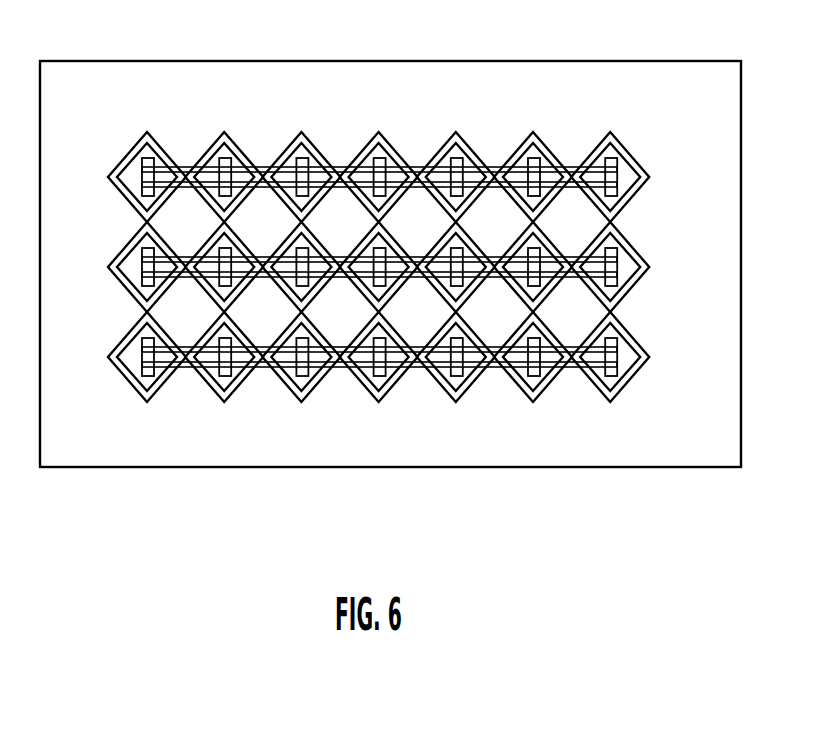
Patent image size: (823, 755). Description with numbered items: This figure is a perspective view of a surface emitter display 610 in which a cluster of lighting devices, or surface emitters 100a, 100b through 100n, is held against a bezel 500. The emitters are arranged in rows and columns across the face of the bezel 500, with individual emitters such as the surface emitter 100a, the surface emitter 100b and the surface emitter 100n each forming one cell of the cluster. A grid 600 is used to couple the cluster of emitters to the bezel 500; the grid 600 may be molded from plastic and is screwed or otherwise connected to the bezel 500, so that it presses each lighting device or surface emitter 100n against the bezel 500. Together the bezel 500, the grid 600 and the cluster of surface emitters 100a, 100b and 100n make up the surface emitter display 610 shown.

The surface emitter display 610 is at (70, 66).
The bezel 500 is at (323, 80).
The surface emitter 100n is at (632, 175).
The surface emitter 100a is at (141, 350).
The surface emitter 100b is at (223, 398).
The grid 600 is at (538, 392).